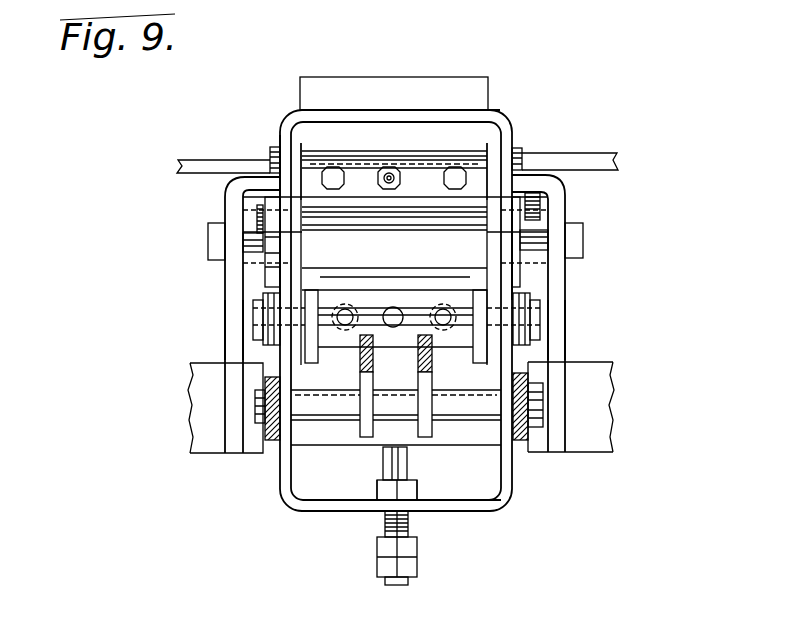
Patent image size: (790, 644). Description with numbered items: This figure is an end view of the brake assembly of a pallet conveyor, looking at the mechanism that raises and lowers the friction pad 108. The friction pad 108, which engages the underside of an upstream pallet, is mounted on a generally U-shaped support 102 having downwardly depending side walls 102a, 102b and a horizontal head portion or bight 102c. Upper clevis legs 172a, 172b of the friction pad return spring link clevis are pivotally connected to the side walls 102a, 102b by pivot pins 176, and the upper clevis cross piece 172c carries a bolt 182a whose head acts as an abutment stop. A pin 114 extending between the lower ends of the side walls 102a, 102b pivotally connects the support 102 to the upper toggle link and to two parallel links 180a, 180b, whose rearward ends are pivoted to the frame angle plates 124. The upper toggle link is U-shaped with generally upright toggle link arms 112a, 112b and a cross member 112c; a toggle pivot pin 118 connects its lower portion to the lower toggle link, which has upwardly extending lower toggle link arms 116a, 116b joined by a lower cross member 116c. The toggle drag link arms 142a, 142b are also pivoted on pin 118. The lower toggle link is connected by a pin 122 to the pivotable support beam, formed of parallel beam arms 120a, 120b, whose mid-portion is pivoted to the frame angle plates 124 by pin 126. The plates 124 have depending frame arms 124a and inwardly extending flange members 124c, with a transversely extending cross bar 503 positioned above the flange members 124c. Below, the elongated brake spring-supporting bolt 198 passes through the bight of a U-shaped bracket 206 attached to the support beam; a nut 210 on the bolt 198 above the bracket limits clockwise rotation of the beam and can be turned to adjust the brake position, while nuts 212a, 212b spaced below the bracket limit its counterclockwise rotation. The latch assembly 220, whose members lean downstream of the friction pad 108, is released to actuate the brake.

The U-shaped support 102 is at (291, 110).
The side wall 102a is at (280, 137).
The side wall 102b is at (509, 128).
The head portion 102c is at (473, 108).
The friction pad 108 is at (437, 77).
The toggle link arm 112a is at (298, 282).
The toggle link arm 112b is at (487, 280).
The cross member 112c is at (422, 243).
The pin 114 is at (534, 220).
The lower toggle link arm 116a is at (284, 425).
The lower toggle link arm 116b is at (500, 413).
The lower cross member 116c is at (382, 448).
The toggle pivot pin 118 is at (533, 313).
The beam arm 120a is at (277, 437).
The beam arm 120b is at (518, 437).
The pin 122 is at (533, 405).
The frame angle plate 124 is at (224, 342).
The frame arm 124a is at (230, 318).
The flange member 124c is at (528, 172).
The pin 126 is at (247, 234).
The link arm 142a is at (313, 367).
The link arm 142b is at (508, 407).
The upper clevis leg 172a is at (300, 147).
The upper clevis leg 172b is at (488, 140).
The upper clevis cross piece 172c is at (403, 190).
The pivot pin 176 is at (423, 158).
The link 180a is at (267, 258).
The link 180b is at (545, 262).
The bolt 182a is at (333, 188).
The brake spring-supporting bolt 198 is at (393, 522).
The U-shaped bracket 206 is at (494, 503).
The nut 210 is at (400, 488).
The nut 212a is at (412, 547).
The nut 212b is at (388, 568).
The latch assembly 220 is at (371, 362).
The cross bar 503 is at (180, 160).